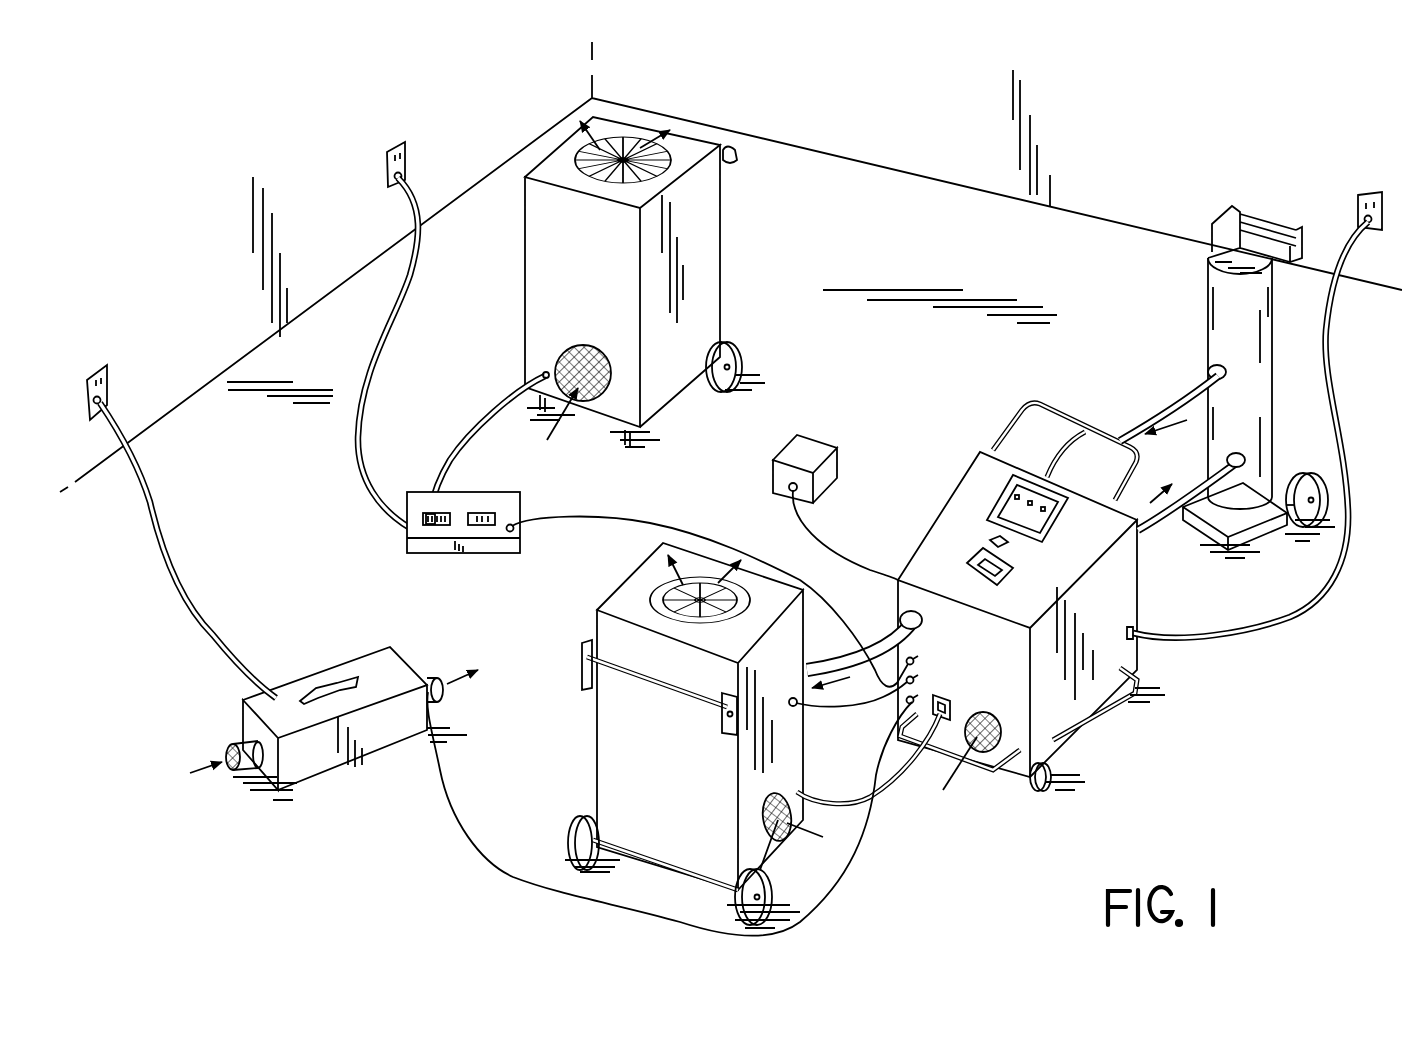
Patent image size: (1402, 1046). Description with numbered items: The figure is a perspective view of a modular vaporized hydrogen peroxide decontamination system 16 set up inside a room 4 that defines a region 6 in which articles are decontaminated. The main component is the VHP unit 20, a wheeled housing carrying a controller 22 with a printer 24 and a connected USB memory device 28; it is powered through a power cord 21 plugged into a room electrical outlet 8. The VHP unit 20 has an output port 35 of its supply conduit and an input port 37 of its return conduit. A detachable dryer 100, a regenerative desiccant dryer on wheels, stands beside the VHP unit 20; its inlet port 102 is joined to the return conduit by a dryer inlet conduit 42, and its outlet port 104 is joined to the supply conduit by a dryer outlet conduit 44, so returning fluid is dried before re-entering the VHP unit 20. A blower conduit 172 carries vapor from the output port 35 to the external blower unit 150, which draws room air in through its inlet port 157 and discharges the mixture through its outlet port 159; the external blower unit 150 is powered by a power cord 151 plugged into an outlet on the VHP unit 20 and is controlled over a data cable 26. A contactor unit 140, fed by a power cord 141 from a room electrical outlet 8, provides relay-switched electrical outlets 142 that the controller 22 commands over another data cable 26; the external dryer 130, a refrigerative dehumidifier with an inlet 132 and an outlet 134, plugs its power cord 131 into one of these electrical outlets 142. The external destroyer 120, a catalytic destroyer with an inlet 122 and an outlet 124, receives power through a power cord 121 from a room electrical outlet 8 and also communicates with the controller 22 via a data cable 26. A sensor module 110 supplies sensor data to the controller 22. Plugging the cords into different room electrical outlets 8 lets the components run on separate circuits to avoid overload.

The room 4 is at (893, 134).
The region 6 is at (918, 270).
The room electrical outlet 8 is at (108, 376).
The modular vaporized hydrogen peroxide (VHP) decontamination system 16 is at (1120, 183).
The VHP unit 20 is at (935, 515).
The power cord 21 is at (1282, 636).
The controller 22 is at (1000, 497).
The printer 24 is at (972, 566).
The data cable 26 is at (628, 520).
The USB memory device 28 is at (992, 540).
The output port 35 is at (922, 626).
The input port 37 is at (993, 757).
The dryer inlet conduit 42 is at (1155, 527).
The dryer outlet conduit 44 is at (1130, 425).
The dryer 100 is at (1203, 305).
The inlet port 102 is at (1244, 457).
The outlet port 104 is at (1210, 368).
The sensor module 110 is at (805, 445).
The external destroyer 120 is at (337, 770).
The power cord 121 is at (180, 567).
The inlet 122 is at (243, 745).
The outlet 124 is at (435, 680).
The external dryer 130 is at (725, 270).
The power cord 131 is at (480, 418).
The inlet 132 is at (577, 353).
The outlet 134 is at (592, 168).
The contactor unit 140 is at (463, 530).
The power cord 141 is at (392, 344).
The electrical outlets 142 is at (485, 512).
The external blower unit 150 is at (598, 741).
The power cord 151 is at (883, 800).
The inlet port 157 is at (781, 837).
The outlet port 159 is at (660, 592).
The blower conduit 172 is at (883, 643).